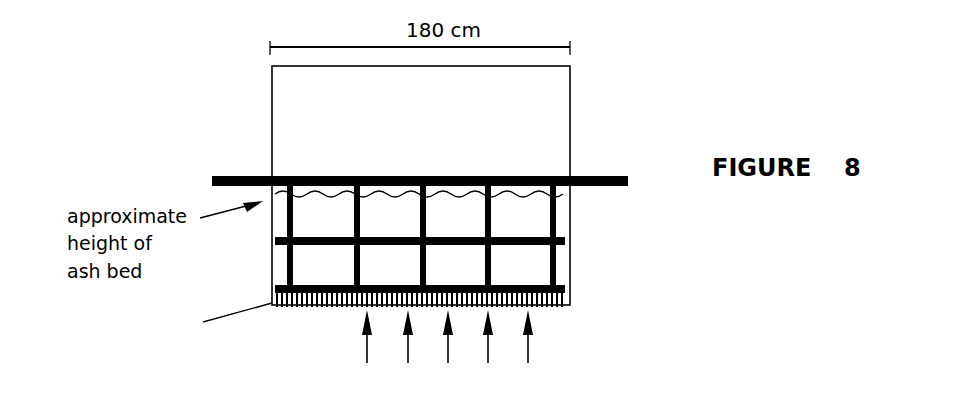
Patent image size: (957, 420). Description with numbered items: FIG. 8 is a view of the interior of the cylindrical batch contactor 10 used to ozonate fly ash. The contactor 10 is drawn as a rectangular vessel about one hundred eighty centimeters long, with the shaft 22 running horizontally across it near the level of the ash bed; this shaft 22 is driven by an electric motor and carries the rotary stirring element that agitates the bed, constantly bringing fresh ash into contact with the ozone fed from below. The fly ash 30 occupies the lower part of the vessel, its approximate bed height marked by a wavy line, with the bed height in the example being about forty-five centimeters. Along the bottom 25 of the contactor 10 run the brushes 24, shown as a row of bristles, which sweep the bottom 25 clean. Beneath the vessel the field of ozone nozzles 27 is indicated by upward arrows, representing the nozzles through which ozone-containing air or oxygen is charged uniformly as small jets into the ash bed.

The cylindrical batch contactor 10 is at (572, 93).
The shaft 22 is at (232, 178).
The fly ash 30 is at (275, 222).
The brushes 24 is at (560, 297).
The bottom 25 is at (548, 305).
The field of ozone nozzles 27 is at (540, 342).